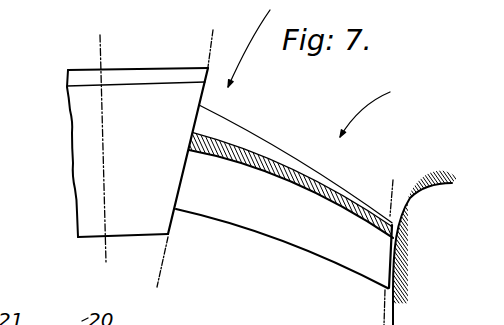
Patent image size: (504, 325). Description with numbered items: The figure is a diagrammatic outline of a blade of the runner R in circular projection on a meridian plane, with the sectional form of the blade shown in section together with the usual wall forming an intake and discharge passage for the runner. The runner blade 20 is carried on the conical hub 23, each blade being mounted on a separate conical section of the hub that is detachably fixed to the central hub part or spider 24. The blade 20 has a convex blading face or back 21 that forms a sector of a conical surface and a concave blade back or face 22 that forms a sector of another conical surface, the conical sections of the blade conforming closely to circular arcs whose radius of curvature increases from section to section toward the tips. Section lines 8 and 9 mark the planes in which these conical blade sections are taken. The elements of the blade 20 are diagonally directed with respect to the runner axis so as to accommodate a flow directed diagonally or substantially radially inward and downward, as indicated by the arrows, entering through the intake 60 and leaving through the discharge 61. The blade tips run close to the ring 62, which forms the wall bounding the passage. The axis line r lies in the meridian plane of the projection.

The runner blade 20 is at (333, 160).
The convex blading face or back 21 is at (282, 150).
The concave blade back or face 22 is at (280, 224).
The conical hub 23 is at (137, 152).
The central hub part or spider 24 is at (68, 80).
The intake passage 60 is at (377, 122).
The discharge passage 61 is at (319, 314).
The ring 62 is at (412, 258).
The section line 8- 8 is at (430, 165).
The section line 9- 9 is at (227, 43).
The runner R is at (160, 67).
The radius r axis r is at (103, 151).